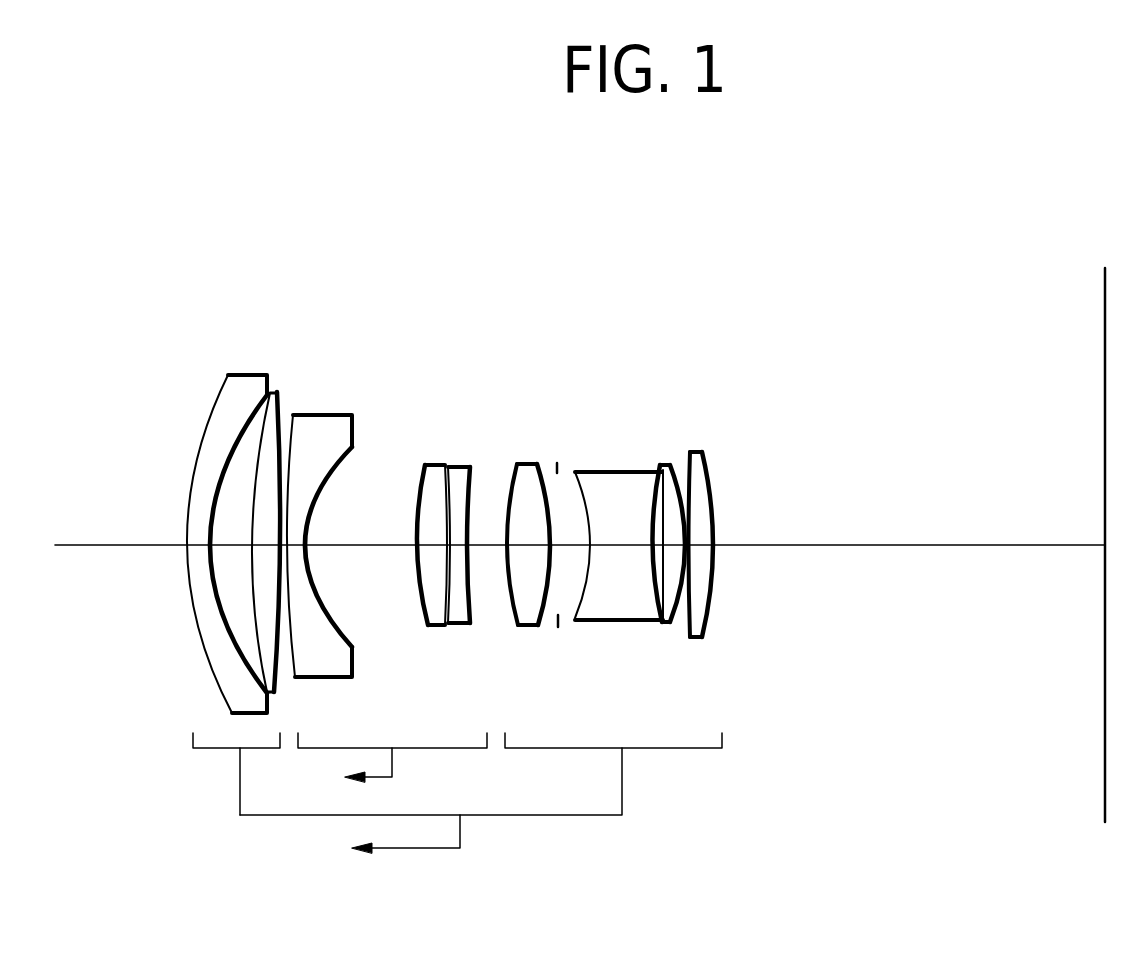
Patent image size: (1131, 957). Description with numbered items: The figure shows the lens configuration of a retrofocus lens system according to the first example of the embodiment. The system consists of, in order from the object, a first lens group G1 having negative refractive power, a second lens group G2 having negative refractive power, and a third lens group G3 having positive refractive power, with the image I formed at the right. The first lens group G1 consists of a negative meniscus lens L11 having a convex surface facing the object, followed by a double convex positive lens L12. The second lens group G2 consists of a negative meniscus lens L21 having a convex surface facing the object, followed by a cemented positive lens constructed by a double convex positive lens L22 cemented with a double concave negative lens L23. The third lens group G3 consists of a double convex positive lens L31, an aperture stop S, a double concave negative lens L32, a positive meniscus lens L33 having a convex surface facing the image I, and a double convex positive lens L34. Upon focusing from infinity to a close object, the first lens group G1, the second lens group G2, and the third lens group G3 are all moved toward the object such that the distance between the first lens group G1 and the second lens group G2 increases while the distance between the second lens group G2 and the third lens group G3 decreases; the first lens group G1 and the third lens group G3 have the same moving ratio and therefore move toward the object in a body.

The negative meniscus lens L11 is at (245, 375).
The double convex positive lens L12 is at (275, 392).
The negative meniscus lens L21 is at (325, 413).
The double convex positive lens L22 is at (435, 463).
The double concave negative lens L23 is at (455, 463).
The double convex positive lens L31 is at (528, 462).
The double concave negative lens L32 is at (606, 470).
The positive meniscus lens L33 is at (660, 463).
The double convex positive lens L34 is at (693, 450).
The aperture stop S is at (557, 470).
The image I is at (1105, 342).
The first lens group G1 is at (232, 537).
The second lens group G2 is at (387, 555).
The third lens group G3 is at (510, 588).